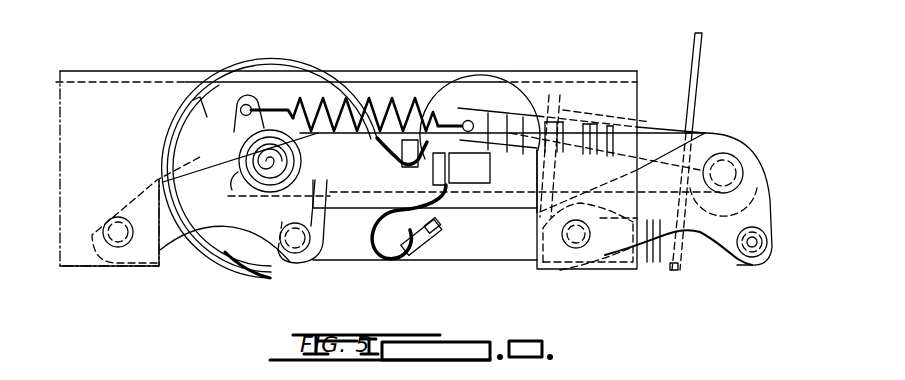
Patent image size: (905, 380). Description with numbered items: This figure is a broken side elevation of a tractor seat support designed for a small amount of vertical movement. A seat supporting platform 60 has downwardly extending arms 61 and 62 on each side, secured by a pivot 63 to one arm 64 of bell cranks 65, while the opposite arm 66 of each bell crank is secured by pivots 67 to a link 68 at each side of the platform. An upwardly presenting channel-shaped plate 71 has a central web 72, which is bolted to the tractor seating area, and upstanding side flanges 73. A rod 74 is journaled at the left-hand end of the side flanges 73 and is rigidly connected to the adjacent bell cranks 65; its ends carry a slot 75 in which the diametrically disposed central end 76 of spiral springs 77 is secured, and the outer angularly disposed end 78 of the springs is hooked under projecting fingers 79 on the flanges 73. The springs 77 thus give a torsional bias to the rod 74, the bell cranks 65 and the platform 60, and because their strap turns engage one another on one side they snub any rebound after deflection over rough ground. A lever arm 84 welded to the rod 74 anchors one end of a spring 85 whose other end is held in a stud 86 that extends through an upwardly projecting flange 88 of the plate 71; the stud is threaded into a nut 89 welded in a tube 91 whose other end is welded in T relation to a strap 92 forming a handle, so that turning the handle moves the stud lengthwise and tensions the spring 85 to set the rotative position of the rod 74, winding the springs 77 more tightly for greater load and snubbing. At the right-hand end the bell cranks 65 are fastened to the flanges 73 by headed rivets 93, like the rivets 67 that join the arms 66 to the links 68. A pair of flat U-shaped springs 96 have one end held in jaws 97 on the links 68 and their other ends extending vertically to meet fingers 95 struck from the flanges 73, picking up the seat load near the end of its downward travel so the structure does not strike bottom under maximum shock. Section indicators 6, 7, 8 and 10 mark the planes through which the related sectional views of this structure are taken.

The seat supporting platform 60 is at (528, 76).
The downwardly extending arm 61 is at (623, 257).
The downwardly extending arm 62 is at (77, 247).
The pivot 63 is at (120, 247).
The arm of bell crank 64 is at (173, 237).
The bell crank 65 is at (247, 212).
The opposite arm of bell crank 66 is at (325, 240).
The pivot 67 is at (300, 252).
The link 68 is at (467, 247).
The channel-shaped plate 71 is at (519, 184).
The central web 72 is at (345, 190).
The side flanges 73 is at (365, 129).
The rod 74 is at (240, 196).
The slot 75 is at (275, 165).
The central end of spiral spring 76 is at (266, 158).
The spiral spring 77 is at (215, 263).
The outer angularly disposed end 78 is at (466, 121).
The projecting fingers 79 is at (437, 103).
The lever arm 84 is at (244, 97).
The spring 85 is at (377, 132).
The stud 86 is at (496, 118).
The upwardly projecting flange 88 is at (547, 110).
The nut 89 is at (603, 87).
The tube 91 is at (650, 124).
The strap 92 is at (700, 68).
The headed rivets 93 is at (733, 165).
The fingers 95 is at (468, 168).
The springs 96 is at (387, 260).
The jaws 97 is at (420, 258).
The section line 6- 6 is at (247, 100).
The section line 7- 7 is at (216, 137).
The section line 8- 8 is at (47, 53).
The section line 10- 10 is at (722, 170).